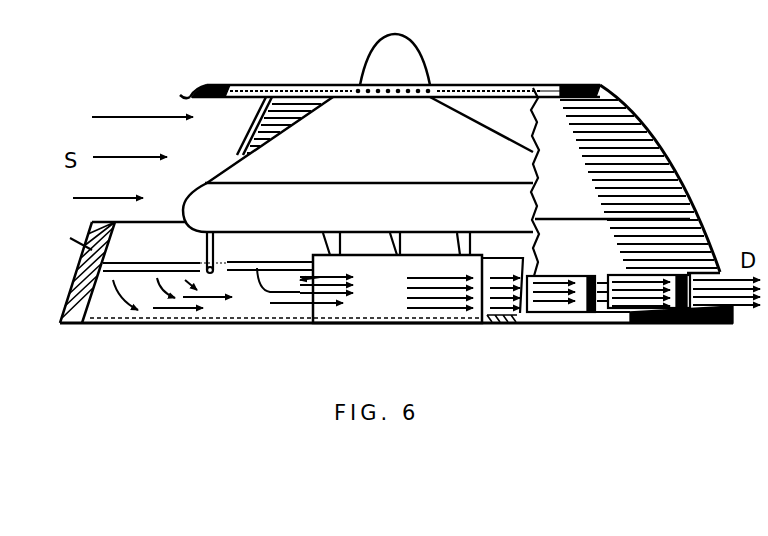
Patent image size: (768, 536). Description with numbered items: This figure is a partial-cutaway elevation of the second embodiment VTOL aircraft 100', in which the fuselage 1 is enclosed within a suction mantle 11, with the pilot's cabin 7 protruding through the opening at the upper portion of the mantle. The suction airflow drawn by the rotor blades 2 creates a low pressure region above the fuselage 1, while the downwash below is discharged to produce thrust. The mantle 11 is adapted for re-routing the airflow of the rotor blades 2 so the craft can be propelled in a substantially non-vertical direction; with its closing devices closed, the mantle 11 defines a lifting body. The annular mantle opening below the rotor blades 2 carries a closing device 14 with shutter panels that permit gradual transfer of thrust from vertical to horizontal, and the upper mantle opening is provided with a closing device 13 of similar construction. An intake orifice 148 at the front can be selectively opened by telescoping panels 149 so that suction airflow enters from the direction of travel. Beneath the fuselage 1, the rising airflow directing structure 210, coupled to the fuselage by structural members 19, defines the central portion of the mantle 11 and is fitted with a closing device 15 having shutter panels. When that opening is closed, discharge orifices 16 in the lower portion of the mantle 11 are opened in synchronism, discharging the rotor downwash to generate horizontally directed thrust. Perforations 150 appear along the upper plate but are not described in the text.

The fuselage 1 is at (520, 164).
The rotor blades 2 is at (247, 262).
The pilot's cabin 7 is at (410, 62).
The suction mantle 11 is at (588, 86).
The closing device 13 is at (287, 86).
The closing device 14 is at (137, 328).
The closing device 15 is at (353, 325).
The discharge orifices 16 is at (570, 302).
The structural members 19 is at (455, 244).
The VTOL aircraft 100' is at (668, 179).
The intake orifice 148 is at (188, 97).
The telescoping panels 149 is at (262, 125).
The perforations 150 is at (400, 95).
The rising airflow directing structure 210 is at (380, 298).